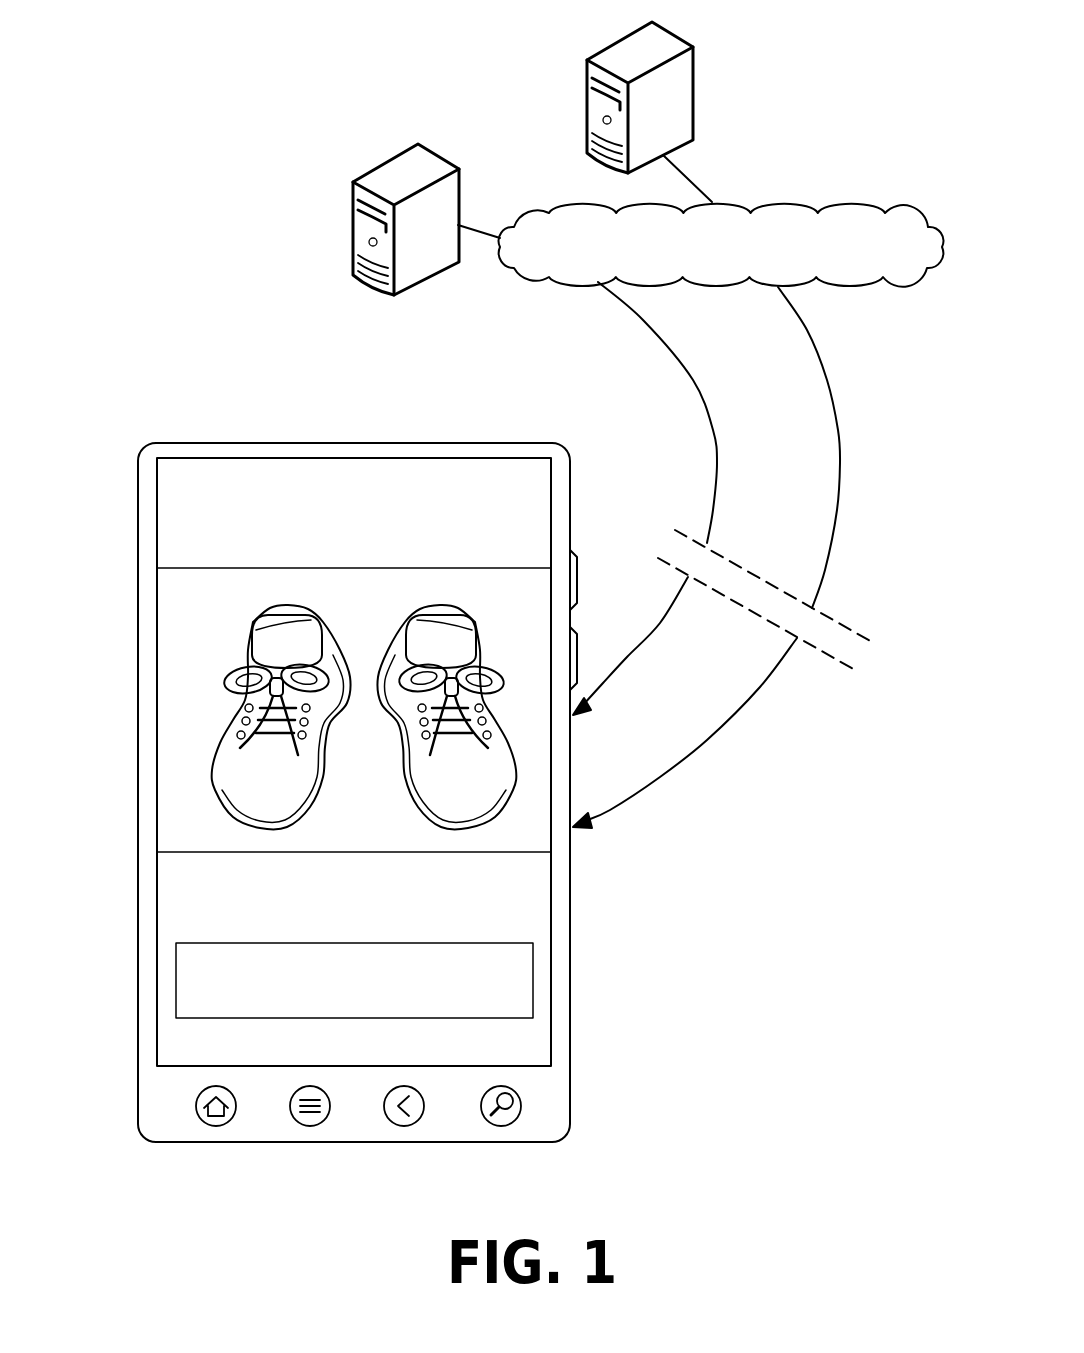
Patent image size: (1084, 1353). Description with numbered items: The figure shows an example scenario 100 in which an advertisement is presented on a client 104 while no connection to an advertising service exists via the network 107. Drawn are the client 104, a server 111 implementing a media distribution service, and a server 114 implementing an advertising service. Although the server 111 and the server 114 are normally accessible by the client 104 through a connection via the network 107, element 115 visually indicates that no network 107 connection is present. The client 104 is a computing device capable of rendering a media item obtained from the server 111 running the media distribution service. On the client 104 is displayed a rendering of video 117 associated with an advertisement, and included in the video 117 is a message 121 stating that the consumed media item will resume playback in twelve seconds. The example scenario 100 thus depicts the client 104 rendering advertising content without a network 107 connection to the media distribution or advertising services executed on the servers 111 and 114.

The example scenario 100 is at (777, 1075).
The client 104 is at (305, 443).
The network 107 is at (700, 271).
The server 111 is at (353, 238).
The server 114 is at (587, 117).
The element 115 is at (832, 633).
The video 117 is at (202, 810).
The message 121 is at (522, 960).